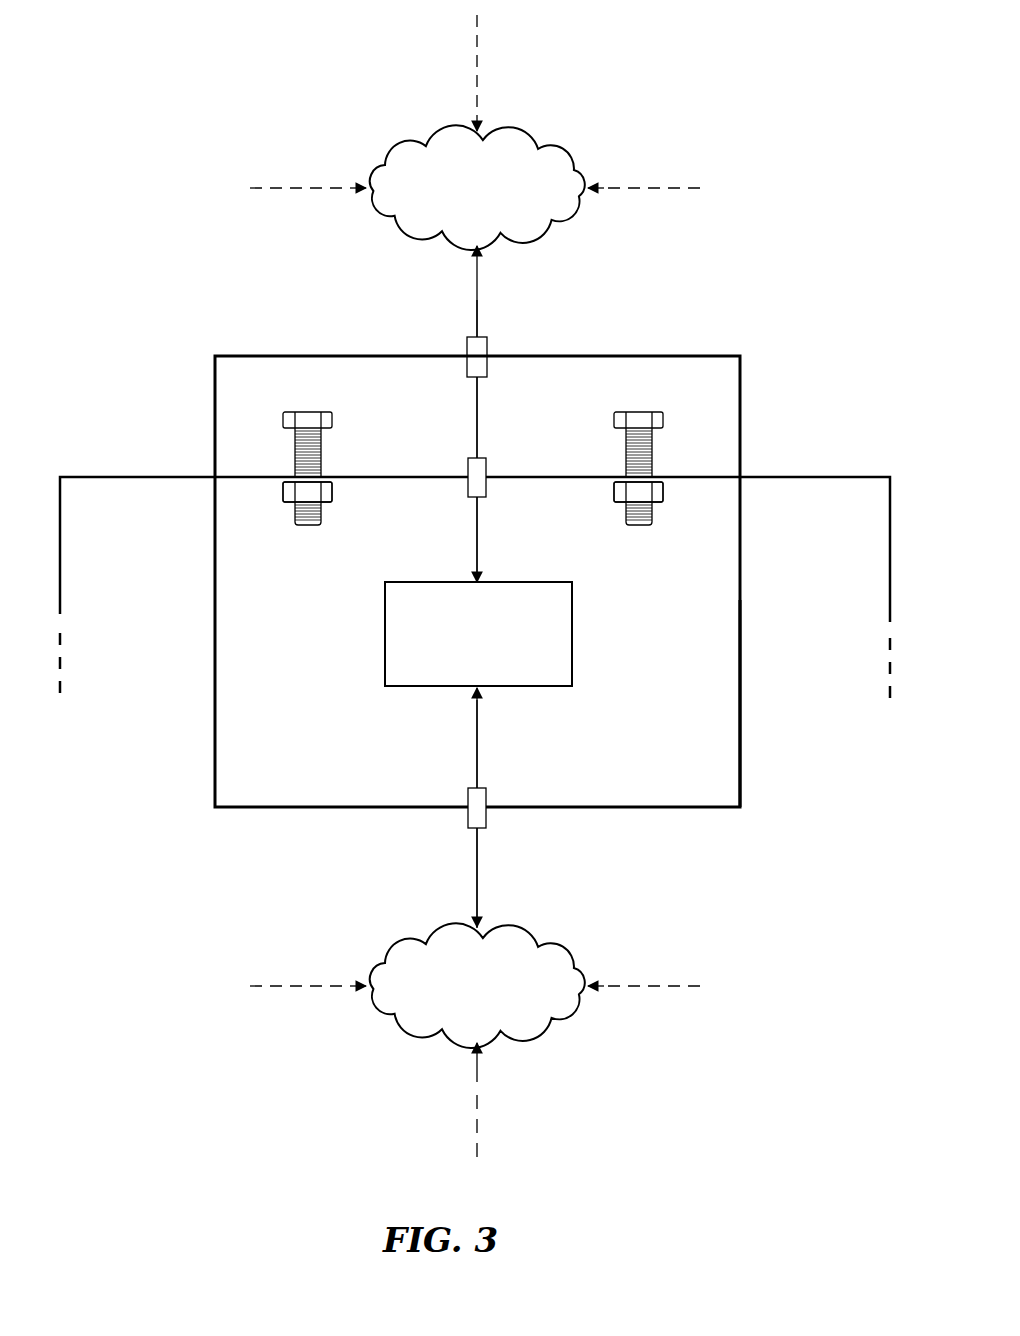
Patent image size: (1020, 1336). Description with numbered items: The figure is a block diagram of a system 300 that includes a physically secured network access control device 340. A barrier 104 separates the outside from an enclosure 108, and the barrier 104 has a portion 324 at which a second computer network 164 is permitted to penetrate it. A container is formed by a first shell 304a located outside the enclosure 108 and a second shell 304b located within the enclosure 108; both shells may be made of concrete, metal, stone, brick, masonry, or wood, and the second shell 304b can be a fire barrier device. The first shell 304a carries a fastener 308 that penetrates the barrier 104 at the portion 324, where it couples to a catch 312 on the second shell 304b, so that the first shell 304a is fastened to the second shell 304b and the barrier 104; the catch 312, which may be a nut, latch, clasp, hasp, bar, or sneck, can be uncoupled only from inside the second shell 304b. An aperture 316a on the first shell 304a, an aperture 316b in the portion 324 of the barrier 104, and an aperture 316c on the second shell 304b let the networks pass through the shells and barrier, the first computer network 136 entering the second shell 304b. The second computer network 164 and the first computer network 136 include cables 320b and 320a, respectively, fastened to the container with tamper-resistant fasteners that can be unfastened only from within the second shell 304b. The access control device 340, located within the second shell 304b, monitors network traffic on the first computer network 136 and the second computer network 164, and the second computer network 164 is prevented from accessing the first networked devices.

The system 300 is at (136, 325).
The second computer network 164 is at (475, 132).
The first computer network 136 is at (475, 1040).
The cable 320b is at (478, 292).
The cable 320a is at (478, 892).
The aperture 316a is at (467, 337).
The aperture 316b is at (470, 462).
The aperture 316c is at (466, 828).
The first shell 304a is at (741, 393).
The second shell 304b is at (741, 643).
The portion 324 is at (418, 477).
The barrier 104 is at (800, 477).
The fastener 308 is at (308, 418).
The catch 312 is at (283, 495).
The access control device 340 is at (478, 634).
The enclosure 108 is at (238, 910).